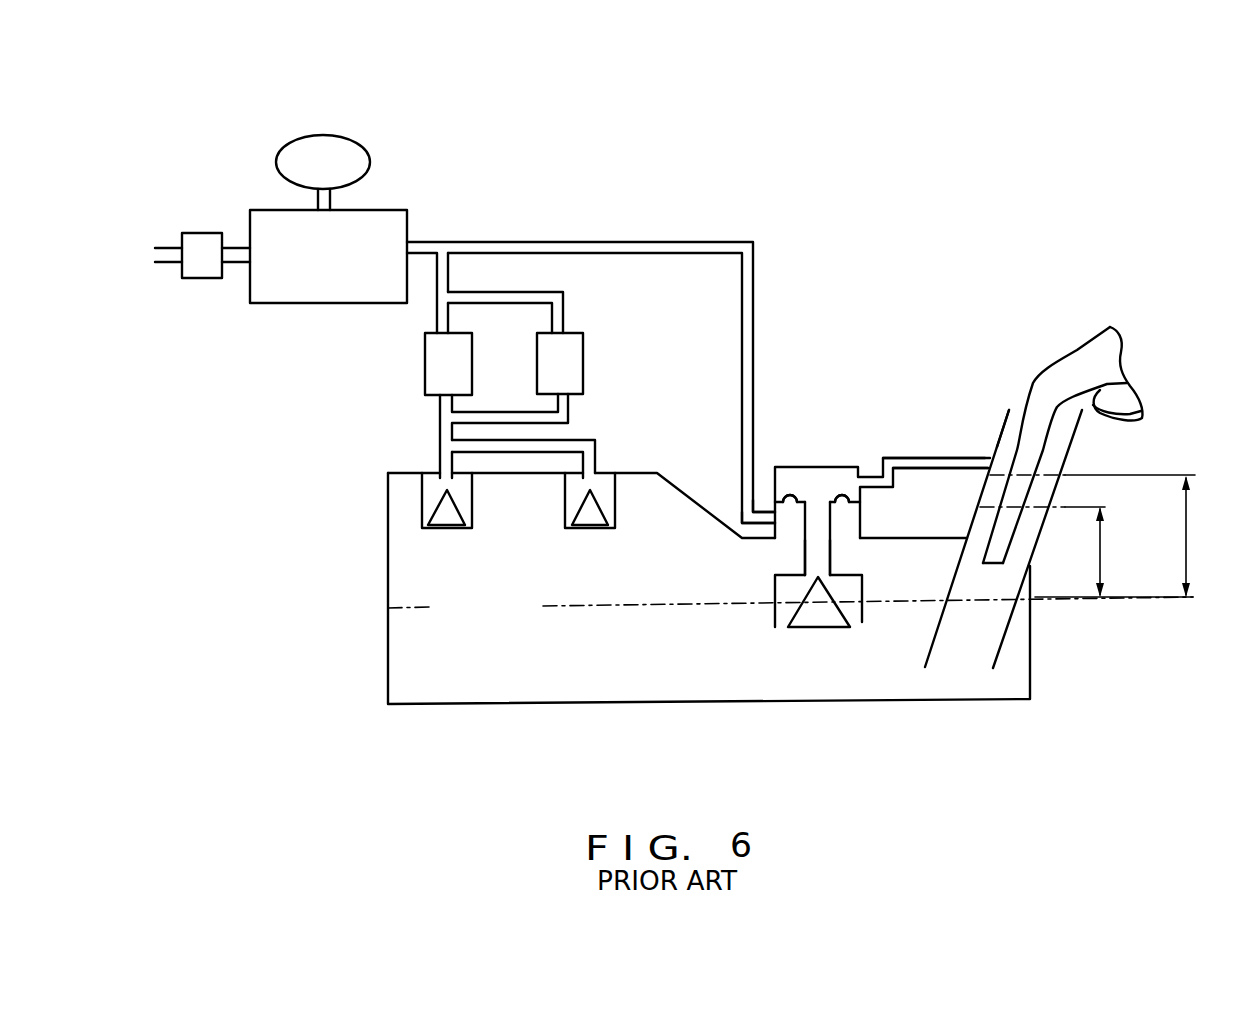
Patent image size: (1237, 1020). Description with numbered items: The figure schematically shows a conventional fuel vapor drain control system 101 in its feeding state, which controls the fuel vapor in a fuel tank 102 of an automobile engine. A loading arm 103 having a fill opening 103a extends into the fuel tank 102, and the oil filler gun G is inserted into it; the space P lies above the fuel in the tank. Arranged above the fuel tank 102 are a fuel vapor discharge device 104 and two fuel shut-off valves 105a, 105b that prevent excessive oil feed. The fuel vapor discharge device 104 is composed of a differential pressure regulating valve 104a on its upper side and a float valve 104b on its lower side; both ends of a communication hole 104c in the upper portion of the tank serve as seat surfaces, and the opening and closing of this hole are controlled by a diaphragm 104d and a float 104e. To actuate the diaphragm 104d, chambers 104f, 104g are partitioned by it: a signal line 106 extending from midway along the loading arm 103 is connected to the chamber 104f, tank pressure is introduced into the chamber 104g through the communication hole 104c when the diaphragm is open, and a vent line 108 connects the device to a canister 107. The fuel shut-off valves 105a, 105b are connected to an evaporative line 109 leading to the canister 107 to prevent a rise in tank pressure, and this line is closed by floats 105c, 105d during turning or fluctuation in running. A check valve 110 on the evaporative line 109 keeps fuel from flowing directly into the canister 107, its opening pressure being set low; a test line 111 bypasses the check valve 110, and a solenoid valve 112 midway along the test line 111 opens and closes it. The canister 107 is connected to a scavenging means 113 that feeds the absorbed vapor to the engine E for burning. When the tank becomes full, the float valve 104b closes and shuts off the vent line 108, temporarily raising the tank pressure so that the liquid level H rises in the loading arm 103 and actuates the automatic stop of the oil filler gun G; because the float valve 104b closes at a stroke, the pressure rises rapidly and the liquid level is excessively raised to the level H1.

The fuel vapor drain control system 101 is at (637, 120).
The fuel tank 102 is at (388, 672).
The loading arm 103 is at (1067, 468).
The fill opening 103a is at (1017, 412).
The fuel vapor discharge device 104 is at (975, 323).
The differential pressure regulating valve 104a is at (805, 480).
The float valve 104b is at (846, 592).
The communication hole 104c is at (805, 545).
The diaphragm 104d is at (790, 491).
The float 104e is at (825, 620).
The chamber 104f is at (838, 480).
The chamber 104g is at (772, 487).
The fuel shut-off valve 105a is at (422, 497).
The fuel shut-off valve 105b is at (617, 497).
The float 105c is at (443, 513).
The float 105d is at (590, 513).
The signal line 106 is at (968, 455).
The canister 107 is at (403, 211).
The vent line 108 is at (688, 241).
The evaporative line 109 is at (440, 423).
The check valve 110 is at (425, 358).
The test line 111 is at (518, 291).
The solenoid valve 112 is at (583, 355).
The scavenging means 113 is at (192, 232).
The engine E is at (326, 133).
The oil filler gun G is at (1113, 363).
The liquid level H is at (1103, 556).
The liquid level H1 is at (1190, 515).
The vapor space P is at (683, 555).